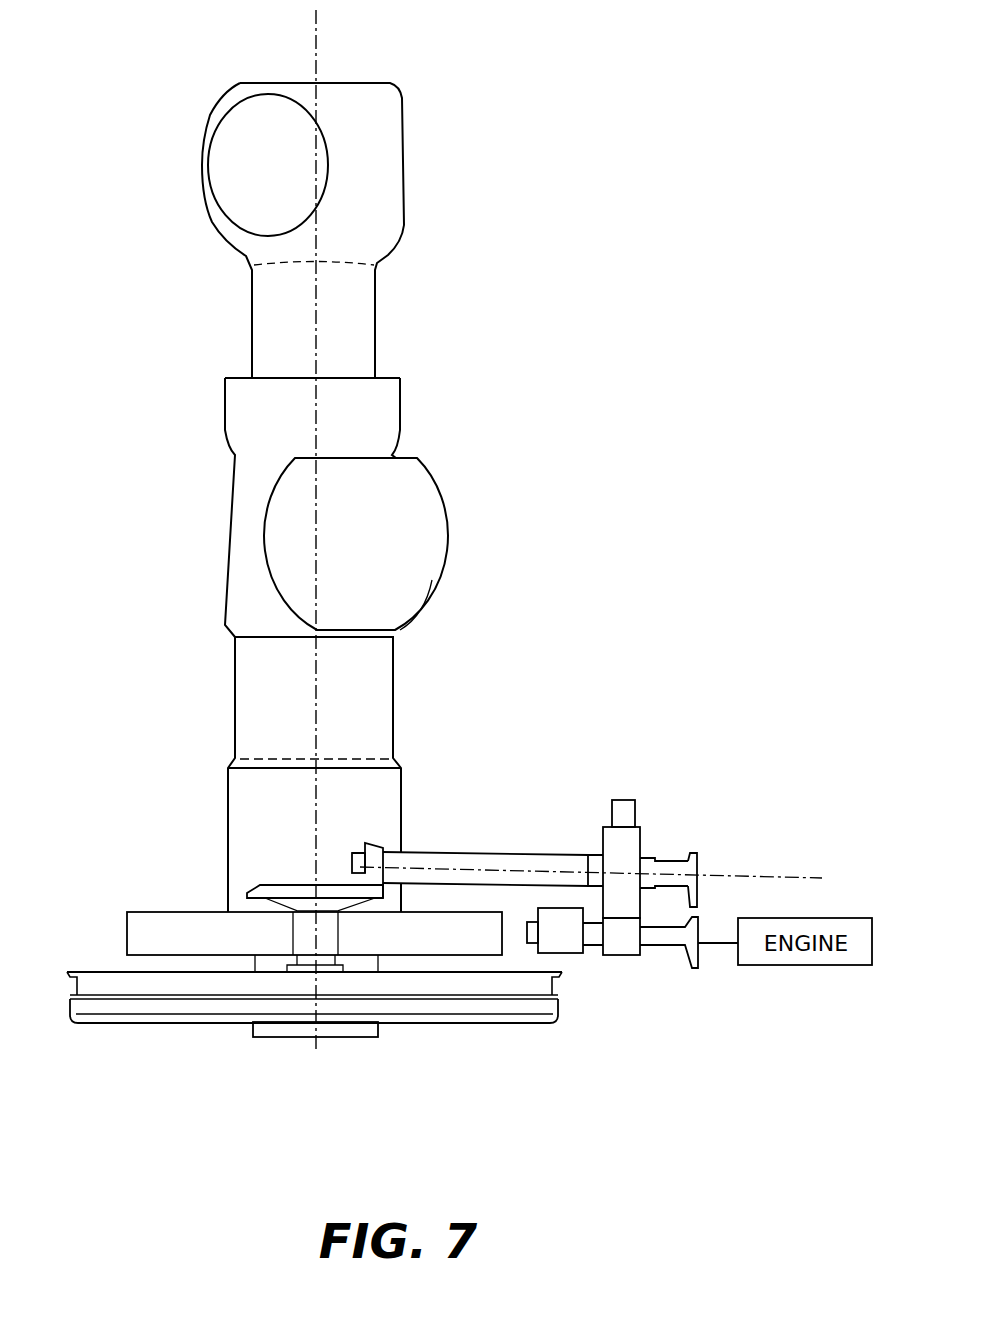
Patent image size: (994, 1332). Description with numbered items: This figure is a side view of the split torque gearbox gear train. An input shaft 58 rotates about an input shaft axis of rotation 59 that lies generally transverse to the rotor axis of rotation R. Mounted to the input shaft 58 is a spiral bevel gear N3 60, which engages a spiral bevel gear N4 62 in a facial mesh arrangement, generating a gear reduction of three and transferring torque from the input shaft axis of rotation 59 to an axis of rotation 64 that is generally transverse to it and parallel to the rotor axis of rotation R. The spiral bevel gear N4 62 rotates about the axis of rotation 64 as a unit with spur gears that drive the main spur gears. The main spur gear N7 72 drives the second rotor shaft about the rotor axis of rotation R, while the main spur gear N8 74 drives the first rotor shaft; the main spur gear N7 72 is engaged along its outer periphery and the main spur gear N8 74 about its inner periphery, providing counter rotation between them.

The rotor axis of rotation R is at (317, 48).
The input shaft 58 is at (515, 853).
The input shaft axis of rotation 59 is at (742, 876).
The spiral bevel gear N3 60 is at (376, 850).
The spiral bevel gear N4 62 is at (262, 895).
The axis of rotation 64 is at (317, 1057).
The main spur gear N7 72 is at (129, 936).
The main spur gear N8 74 is at (75, 1012).